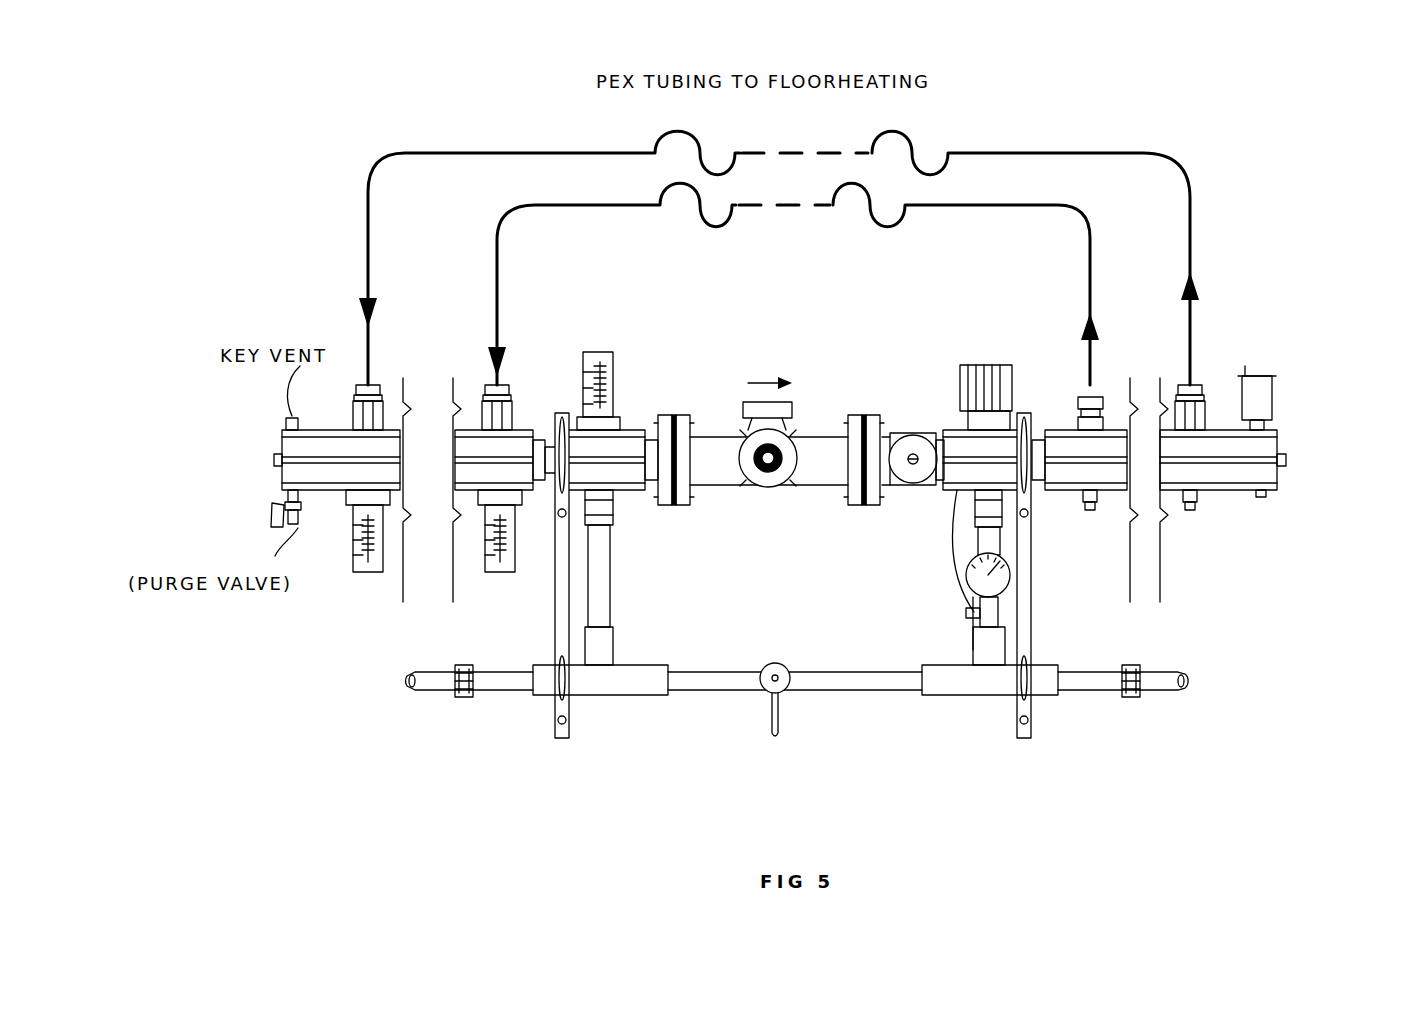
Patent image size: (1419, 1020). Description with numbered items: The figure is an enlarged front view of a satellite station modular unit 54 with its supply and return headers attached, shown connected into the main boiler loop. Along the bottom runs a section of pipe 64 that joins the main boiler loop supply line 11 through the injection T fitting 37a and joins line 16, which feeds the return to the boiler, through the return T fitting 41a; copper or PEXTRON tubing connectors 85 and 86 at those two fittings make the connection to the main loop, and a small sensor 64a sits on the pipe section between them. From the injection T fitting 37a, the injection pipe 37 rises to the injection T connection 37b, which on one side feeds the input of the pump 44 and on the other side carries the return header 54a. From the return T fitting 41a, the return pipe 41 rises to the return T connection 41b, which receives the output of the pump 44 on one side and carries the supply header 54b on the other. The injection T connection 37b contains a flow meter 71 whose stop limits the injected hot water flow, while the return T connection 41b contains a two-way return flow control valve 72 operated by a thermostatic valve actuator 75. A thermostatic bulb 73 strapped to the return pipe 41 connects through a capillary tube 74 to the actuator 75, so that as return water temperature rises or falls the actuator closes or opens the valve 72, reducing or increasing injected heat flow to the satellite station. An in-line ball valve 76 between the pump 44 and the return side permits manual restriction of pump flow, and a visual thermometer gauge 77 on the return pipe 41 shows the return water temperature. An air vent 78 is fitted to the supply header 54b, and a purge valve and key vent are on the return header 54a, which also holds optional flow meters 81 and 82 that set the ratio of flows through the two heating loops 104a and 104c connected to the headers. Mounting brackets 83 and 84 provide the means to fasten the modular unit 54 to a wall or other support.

The heating loop 104a is at (1193, 232).
The heating loop 104c is at (1007, 205).
The modular unit 54 is at (695, 356).
The return header 54a is at (274, 458).
The supply header 54b is at (1282, 447).
The two-way return flow control valve 72 is at (856, 330).
The thermostatic valve actuator 75 is at (1010, 372).
The return pipe 41 is at (888, 540).
The return T fitting 41a is at (984, 700).
The return T connection 41b is at (1006, 318).
The injection pipe 37 is at (586, 577).
The injection T fitting 37a is at (622, 697).
The injection T connection 37b is at (546, 374).
The in-line ball valve 76 is at (916, 433).
The flow meter 71 is at (614, 405).
The pump 44 is at (792, 415).
The air vent 78 is at (1266, 374).
The capillary tube 74 is at (968, 527).
The temperature gauge 77 is at (918, 574).
The thermostatic bulb 73 is at (966, 606).
The flow meter 81 is at (363, 574).
The flow meter 82 is at (478, 575).
The mounting bracket 83 is at (556, 637).
The mounting bracket 84 is at (1032, 615).
The section of pipe 64 is at (731, 665).
The sensor 64a is at (780, 697).
The main boiler loop supply line 11 is at (398, 690).
The boiler loop line 16 is at (1152, 697).
The copper or PEXTRON tubing connector 85 is at (463, 708).
The copper or PEXTRON tubing connector 86 is at (1128, 697).